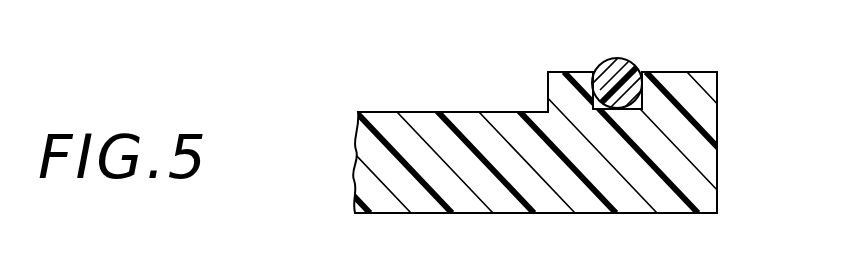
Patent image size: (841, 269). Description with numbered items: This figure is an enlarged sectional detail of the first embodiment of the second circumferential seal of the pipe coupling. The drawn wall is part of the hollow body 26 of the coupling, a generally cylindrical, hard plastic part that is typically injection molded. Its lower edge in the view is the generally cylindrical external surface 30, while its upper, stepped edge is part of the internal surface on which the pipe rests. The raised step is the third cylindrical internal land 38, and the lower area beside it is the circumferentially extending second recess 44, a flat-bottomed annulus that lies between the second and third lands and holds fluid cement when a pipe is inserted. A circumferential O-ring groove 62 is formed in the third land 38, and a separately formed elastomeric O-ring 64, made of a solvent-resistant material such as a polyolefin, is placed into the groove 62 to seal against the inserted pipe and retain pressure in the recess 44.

The hollow body 26 is at (353, 160).
The second recess 44 is at (394, 112).
The third cylindrical internal land 38 is at (552, 72).
The O-ring groove 62 is at (670, 72).
The O-ring 64 is at (625, 60).
The external surface 30 is at (692, 214).